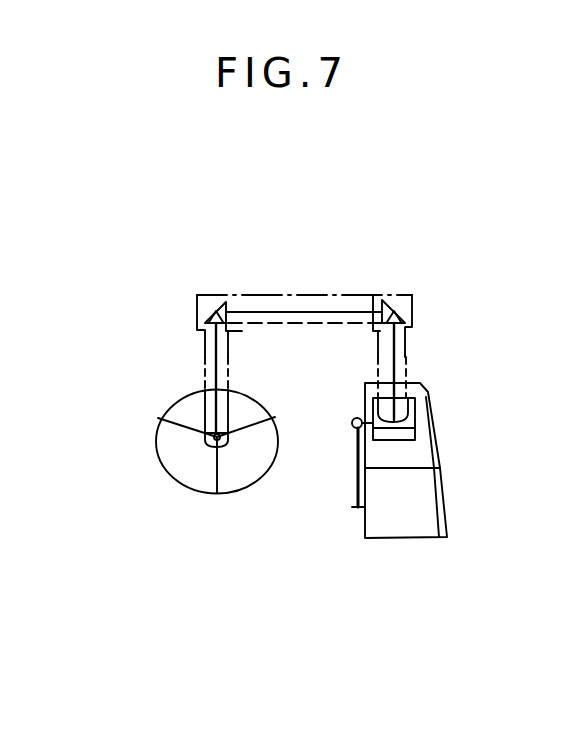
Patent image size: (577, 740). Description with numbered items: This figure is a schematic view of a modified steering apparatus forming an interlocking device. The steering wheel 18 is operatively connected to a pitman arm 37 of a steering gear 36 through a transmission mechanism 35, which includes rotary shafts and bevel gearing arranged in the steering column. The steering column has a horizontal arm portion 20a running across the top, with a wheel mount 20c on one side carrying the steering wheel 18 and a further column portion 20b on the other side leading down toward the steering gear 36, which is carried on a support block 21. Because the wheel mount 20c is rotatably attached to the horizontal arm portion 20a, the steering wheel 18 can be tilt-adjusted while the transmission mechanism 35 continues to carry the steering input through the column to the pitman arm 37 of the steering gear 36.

The steering wheel 18 is at (165, 470).
The horizontal arm portion 20a is at (273, 295).
The right guide portion 20b is at (412, 345).
The wheel mount 20c is at (197, 295).
The support block 21 is at (443, 510).
The transmission mechanism 35 is at (333, 311).
The steering gear 36 is at (410, 420).
The pitman arm 37 is at (360, 418).